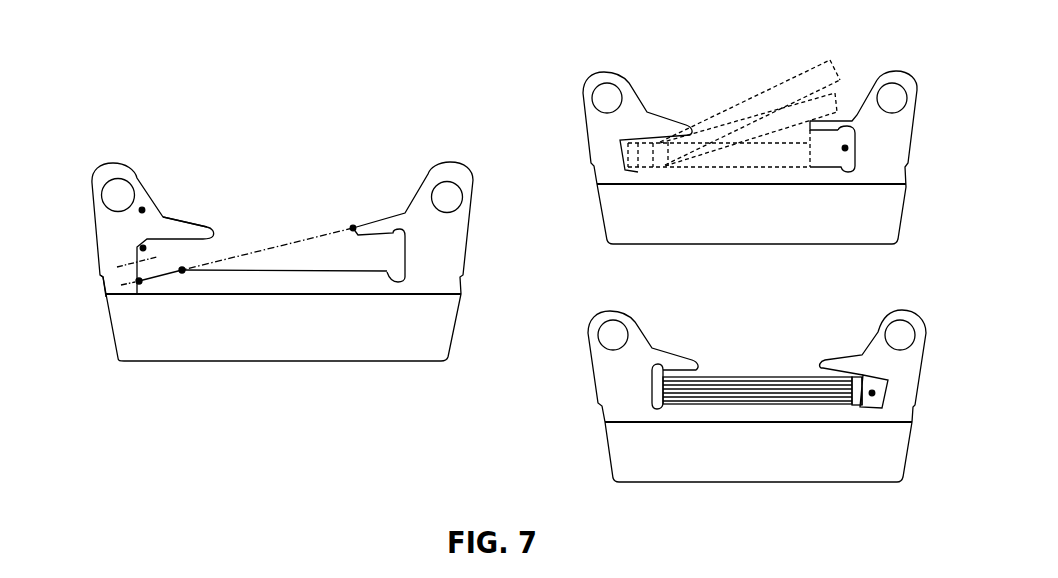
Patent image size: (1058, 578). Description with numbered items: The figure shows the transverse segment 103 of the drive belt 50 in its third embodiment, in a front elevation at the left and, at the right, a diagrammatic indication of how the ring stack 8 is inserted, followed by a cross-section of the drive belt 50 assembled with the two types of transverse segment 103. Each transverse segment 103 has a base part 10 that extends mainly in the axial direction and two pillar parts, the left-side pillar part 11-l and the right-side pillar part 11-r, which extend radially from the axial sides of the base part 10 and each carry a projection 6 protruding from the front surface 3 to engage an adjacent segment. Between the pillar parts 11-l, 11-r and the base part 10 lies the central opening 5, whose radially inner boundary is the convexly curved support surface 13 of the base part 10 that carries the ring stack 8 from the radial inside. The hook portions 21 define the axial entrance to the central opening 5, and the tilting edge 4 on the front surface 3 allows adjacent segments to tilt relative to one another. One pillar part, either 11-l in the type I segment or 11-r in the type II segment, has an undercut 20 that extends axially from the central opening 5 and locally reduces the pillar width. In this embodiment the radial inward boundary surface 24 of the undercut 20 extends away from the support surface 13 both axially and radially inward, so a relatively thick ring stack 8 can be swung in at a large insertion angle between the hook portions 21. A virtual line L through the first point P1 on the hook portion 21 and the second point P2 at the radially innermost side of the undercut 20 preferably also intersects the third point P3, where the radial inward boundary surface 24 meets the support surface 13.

The left-side pillar part 11-l is at (98, 183).
The right-side pillar part 11-r is at (463, 173).
The projection 6 is at (121, 192).
The base part 10 is at (450, 309).
The central opening 5 is at (326, 263).
The hook portion 21 is at (176, 218).
The undercut 20 is at (143, 248).
The front surface 3 is at (143, 209).
The virtual line L is at (274, 248).
The first point P1 is at (353, 227).
The second point P2 is at (139, 281).
The third point P3 is at (182, 270).
The radial inward boundary surface 24 is at (158, 279).
The tilting edge 4 is at (220, 297).
The support surface 13 is at (275, 274).
The transverse segment 103 is at (363, 362).
The ring stack 8 is at (757, 104).
The drive belt 50 is at (565, 385).